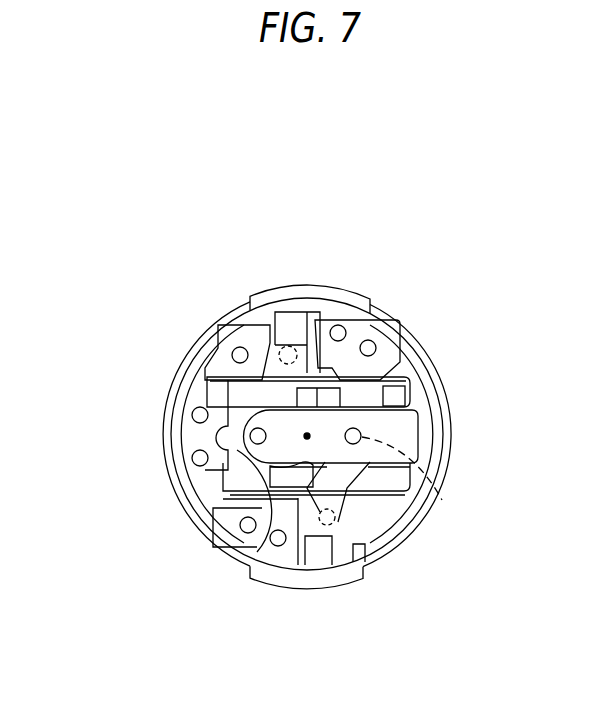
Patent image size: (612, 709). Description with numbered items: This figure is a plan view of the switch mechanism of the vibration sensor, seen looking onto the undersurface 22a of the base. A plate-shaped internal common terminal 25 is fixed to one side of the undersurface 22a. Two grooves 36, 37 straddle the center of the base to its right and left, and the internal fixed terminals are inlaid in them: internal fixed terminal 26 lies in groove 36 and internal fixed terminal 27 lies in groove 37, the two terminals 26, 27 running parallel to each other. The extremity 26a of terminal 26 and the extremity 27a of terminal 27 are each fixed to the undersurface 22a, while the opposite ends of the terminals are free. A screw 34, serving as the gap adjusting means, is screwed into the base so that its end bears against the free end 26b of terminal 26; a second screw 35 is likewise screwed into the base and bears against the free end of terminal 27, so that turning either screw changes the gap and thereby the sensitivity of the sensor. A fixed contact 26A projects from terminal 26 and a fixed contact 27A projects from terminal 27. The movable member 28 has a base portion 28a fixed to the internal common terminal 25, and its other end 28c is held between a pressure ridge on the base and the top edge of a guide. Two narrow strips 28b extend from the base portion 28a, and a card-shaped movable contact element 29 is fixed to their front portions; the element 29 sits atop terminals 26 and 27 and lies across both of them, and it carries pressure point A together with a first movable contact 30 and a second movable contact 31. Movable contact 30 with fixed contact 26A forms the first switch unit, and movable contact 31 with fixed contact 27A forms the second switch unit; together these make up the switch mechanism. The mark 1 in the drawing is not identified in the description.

The internal fixed terminal 26 is at (390, 311).
The extremity of internal fixed terminal 26a is at (395, 313).
The undersurface of base 22a is at (320, 548).
The free end of internal fixed terminal 26b is at (290, 345).
The optical axis 1 is at (308, 433).
The screw 34 is at (278, 349).
The screw 35 is at (340, 517).
The internal common terminal 25 is at (262, 410).
The second movable contact 31 is at (256, 432).
The fixed contact 27A is at (245, 428).
The movable member 28 is at (193, 393).
The base portion of movable member 28a is at (193, 433).
The groove 37 is at (226, 480).
The movable contact element 29 is at (240, 487).
The internal fixed terminal 27 is at (220, 522).
The extremity of internal fixed terminal 27a is at (232, 537).
The narrow strips 28b is at (395, 365).
The first movable contact 30 is at (392, 403).
The other end of movable member 28c is at (437, 425).
The fixed contact 26A is at (440, 493).
The groove 36 is at (367, 465).